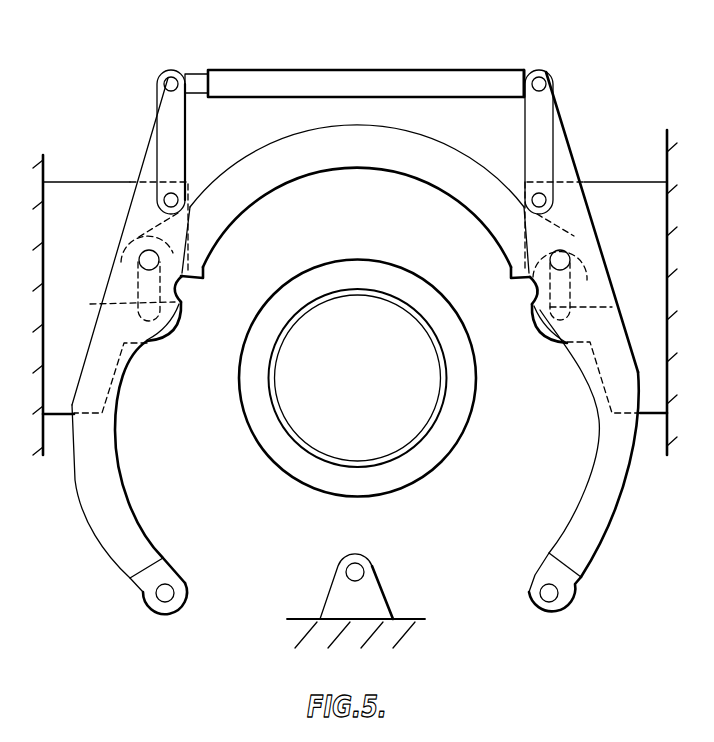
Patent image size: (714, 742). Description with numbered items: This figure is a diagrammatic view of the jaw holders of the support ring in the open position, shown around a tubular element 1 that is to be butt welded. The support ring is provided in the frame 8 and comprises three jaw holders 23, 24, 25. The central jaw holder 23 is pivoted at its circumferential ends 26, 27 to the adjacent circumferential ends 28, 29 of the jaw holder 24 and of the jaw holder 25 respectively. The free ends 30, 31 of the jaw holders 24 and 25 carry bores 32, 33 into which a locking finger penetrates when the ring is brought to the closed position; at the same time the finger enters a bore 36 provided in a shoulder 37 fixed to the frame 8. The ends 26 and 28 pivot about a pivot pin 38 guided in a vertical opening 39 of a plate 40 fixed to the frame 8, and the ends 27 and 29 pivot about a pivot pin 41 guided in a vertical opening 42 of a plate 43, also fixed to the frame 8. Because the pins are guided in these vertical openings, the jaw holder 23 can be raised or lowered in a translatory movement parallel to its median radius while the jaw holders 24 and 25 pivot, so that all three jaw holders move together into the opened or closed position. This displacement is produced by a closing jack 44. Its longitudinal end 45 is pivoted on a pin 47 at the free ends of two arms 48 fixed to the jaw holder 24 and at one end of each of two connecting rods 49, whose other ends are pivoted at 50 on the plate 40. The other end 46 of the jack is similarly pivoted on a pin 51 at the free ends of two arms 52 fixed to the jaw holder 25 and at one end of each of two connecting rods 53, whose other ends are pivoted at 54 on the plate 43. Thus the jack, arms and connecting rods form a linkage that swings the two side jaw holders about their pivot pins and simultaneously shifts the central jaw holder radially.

The tubular element 1 is at (296, 431).
The frame 8 is at (43, 433).
The jaw holder 23 is at (363, 143).
The jaw holder 24 is at (100, 457).
The jaw holder 25 is at (606, 450).
The circumferential end 26 is at (207, 267).
The circumferential end 27 is at (515, 269).
The circumferential end 28 is at (182, 298).
The circumferential end 29 is at (540, 312).
The free end 30 is at (147, 580).
The free end 31 is at (574, 587).
The bore 32 is at (170, 601).
The bore 33 is at (556, 596).
The bore 36 is at (353, 572).
The shoulder 37 is at (372, 595).
The pivot pin 38 is at (147, 260).
The vertical opening 39 is at (90, 304).
The plate 40 is at (98, 184).
The pivot pin 41 is at (567, 264).
The vertical opening 42 is at (622, 307).
The plate 43 is at (647, 398).
The closing jack 44 is at (342, 80).
The longitudinal end 45 is at (197, 72).
The other end 46 is at (534, 40).
The pin 47 is at (171, 76).
The arms 48 is at (152, 125).
The connecting rods 49 is at (170, 143).
The pivot 50 is at (166, 200).
The pin 51 is at (546, 73).
The arms 52 is at (559, 133).
The connecting rods 53 is at (537, 130).
The pivot 54 is at (547, 204).